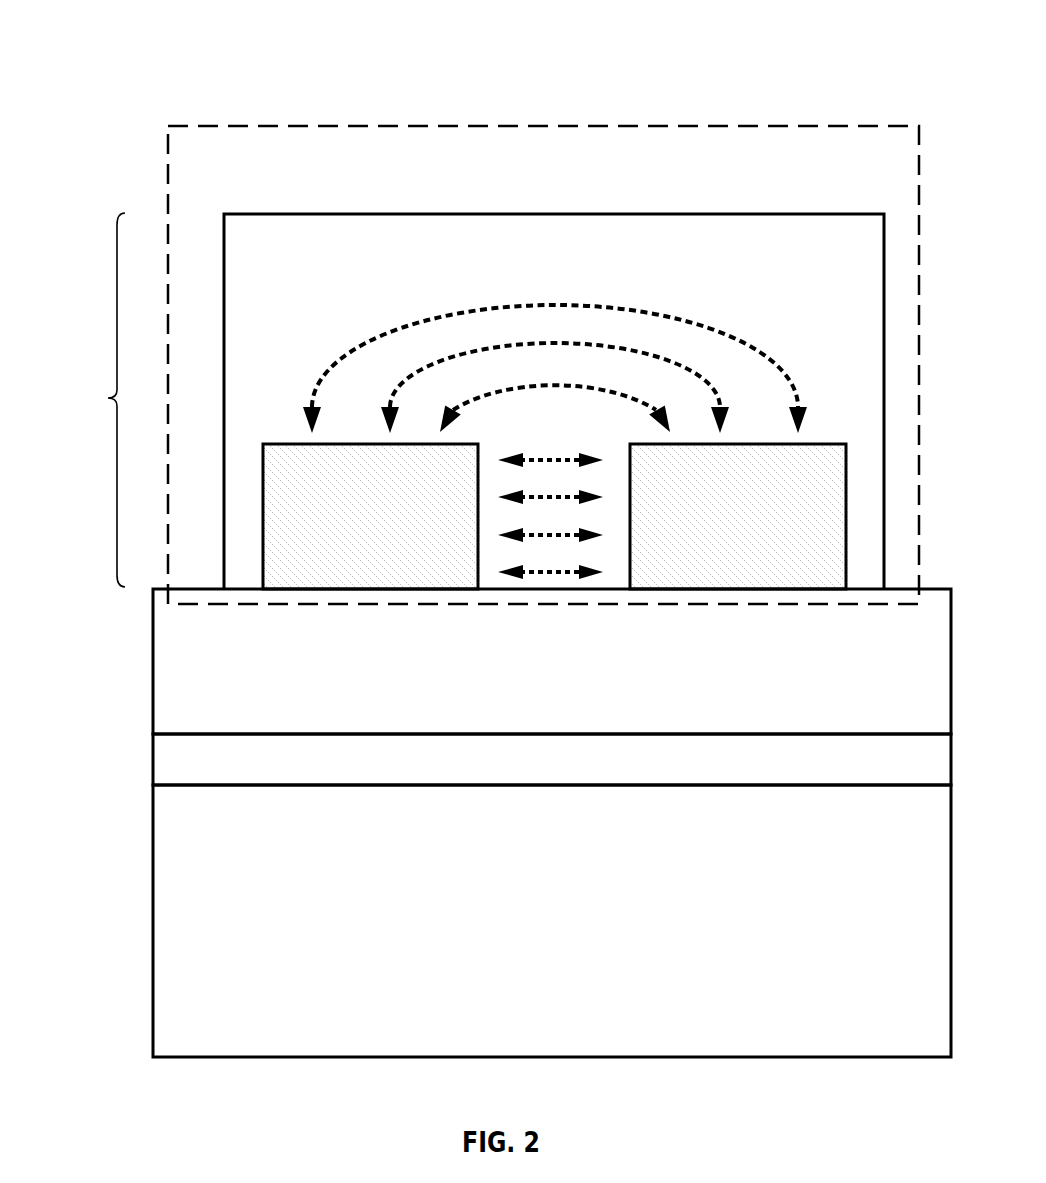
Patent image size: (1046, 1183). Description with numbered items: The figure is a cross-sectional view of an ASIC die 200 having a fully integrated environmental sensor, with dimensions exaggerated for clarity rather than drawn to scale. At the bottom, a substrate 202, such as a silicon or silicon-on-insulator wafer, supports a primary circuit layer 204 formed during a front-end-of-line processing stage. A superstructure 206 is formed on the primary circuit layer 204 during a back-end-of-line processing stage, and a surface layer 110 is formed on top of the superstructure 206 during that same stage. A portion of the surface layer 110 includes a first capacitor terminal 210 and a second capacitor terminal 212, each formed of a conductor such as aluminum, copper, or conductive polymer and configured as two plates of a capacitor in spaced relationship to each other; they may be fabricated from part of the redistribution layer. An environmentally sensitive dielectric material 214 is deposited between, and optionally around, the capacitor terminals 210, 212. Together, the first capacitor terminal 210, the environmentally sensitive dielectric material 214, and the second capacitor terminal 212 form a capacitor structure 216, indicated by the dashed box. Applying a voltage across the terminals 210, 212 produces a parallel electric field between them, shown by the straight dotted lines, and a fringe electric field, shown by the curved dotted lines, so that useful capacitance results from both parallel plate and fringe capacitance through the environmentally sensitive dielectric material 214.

The ASIC die 200 is at (903, 48).
The substrate 202 is at (153, 955).
The primary circuit layer 204 is at (153, 761).
The superstructure 206 is at (153, 663).
The surface layer 110 is at (88, 400).
The first capacitor terminal 210 is at (350, 575).
The second capacitor terminal 212 is at (783, 577).
The environmentally sensitive dielectric material 214 is at (355, 228).
The capacitor structure 216 is at (168, 180).